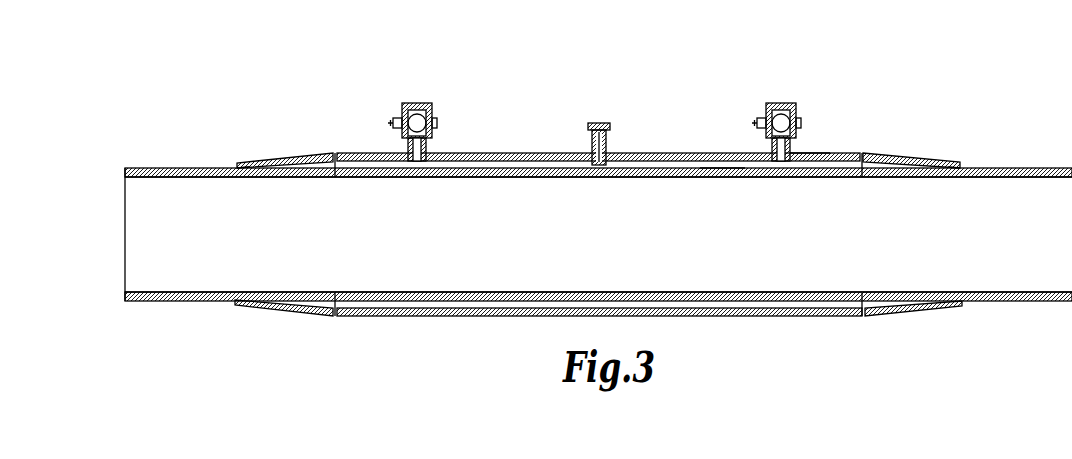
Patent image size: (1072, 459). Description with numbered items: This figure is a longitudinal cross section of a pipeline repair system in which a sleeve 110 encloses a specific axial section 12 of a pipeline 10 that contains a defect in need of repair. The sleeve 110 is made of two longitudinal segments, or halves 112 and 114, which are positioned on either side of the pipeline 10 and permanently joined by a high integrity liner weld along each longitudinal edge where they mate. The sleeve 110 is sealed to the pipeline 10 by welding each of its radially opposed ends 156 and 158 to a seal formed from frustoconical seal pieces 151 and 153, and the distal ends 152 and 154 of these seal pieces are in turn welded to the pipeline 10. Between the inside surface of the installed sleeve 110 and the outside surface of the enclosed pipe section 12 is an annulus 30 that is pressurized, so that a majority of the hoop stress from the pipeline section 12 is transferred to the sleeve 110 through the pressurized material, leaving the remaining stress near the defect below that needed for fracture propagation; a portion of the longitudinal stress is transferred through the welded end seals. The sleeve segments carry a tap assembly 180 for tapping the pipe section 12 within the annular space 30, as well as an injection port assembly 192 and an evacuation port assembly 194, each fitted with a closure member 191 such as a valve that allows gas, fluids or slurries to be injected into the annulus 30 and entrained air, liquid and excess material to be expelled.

The pipeline 10 is at (183, 167).
The axial section of pipeline 12 is at (528, 292).
The annulus 30 is at (723, 168).
The sleeve 110 is at (490, 158).
The sleeve half 112 is at (810, 160).
The sleeve half 114 is at (795, 317).
The frustoconical seal piece 151 is at (289, 158).
The distal end of seal 152 is at (237, 164).
The frustoconical seal piece 153 is at (912, 160).
The distal end of seal 154 is at (962, 166).
The sleeve end 156 is at (335, 153).
The sleeve end 158 is at (862, 153).
The tap assembly 180 is at (616, 143).
The closure member 191 is at (399, 124).
The injection port assembly 192 is at (418, 103).
The evacuation port assembly 194 is at (782, 103).